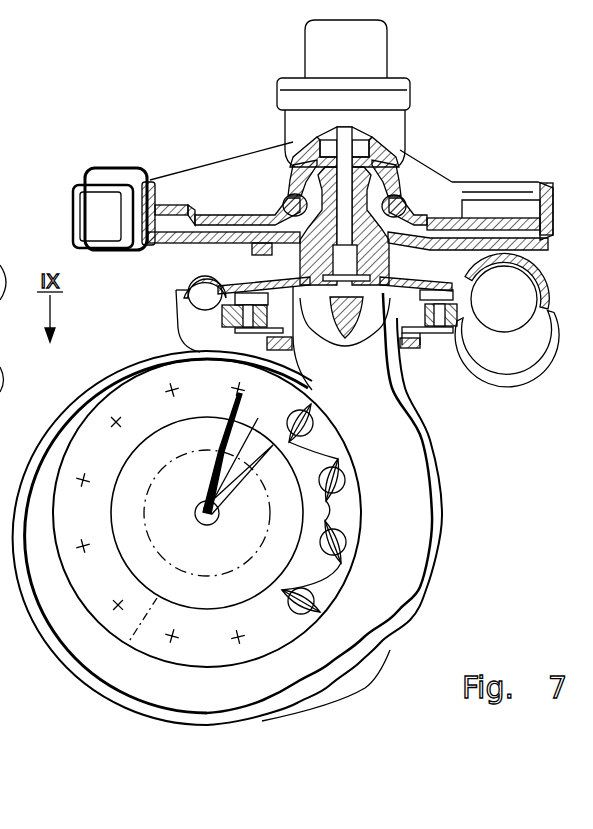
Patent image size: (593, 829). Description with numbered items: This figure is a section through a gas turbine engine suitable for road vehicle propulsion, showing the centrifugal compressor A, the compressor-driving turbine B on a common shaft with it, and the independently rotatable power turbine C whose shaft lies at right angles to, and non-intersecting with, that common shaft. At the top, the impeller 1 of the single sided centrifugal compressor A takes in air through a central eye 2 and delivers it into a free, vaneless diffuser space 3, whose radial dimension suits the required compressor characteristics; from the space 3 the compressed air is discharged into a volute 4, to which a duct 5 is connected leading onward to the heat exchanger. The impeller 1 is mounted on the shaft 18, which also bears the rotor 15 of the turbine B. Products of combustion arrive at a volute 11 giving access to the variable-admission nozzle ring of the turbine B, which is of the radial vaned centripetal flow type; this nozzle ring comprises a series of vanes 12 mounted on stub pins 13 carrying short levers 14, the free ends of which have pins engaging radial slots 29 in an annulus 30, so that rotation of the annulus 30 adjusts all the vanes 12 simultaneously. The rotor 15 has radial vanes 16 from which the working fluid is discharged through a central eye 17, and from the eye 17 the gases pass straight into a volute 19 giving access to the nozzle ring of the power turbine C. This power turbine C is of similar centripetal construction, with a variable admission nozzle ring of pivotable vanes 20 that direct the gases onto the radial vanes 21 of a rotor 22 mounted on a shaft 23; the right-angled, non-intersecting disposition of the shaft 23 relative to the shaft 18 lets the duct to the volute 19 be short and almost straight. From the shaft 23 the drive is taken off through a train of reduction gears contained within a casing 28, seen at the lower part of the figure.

The impeller 1 is at (396, 214).
The central eye 2 is at (376, 200).
The free diffuser space 3 is at (500, 245).
The volute 4 is at (115, 168).
The duct 5 is at (75, 210).
The volute 11 is at (203, 291).
The vanes 12 is at (236, 299).
The stub pins 13 is at (233, 317).
The short levers 14 is at (423, 337).
The rotor 15 is at (338, 332).
The radial vanes 16 is at (377, 307).
The central eye 17 is at (350, 411).
The shaft 18 is at (326, 192).
The volute 19 is at (418, 485).
The pivotable vanes 20 is at (322, 449).
The radial vanes 21 is at (243, 393).
The rotor 22 is at (130, 644).
The shaft 23 is at (213, 521).
The casing 28 is at (370, 684).
The radial slots 29 is at (423, 353).
The annulus 30 is at (404, 348).
The centrifugal compressor A is at (488, 182).
The turbine B is at (545, 276).
The power turbine C is at (38, 619).